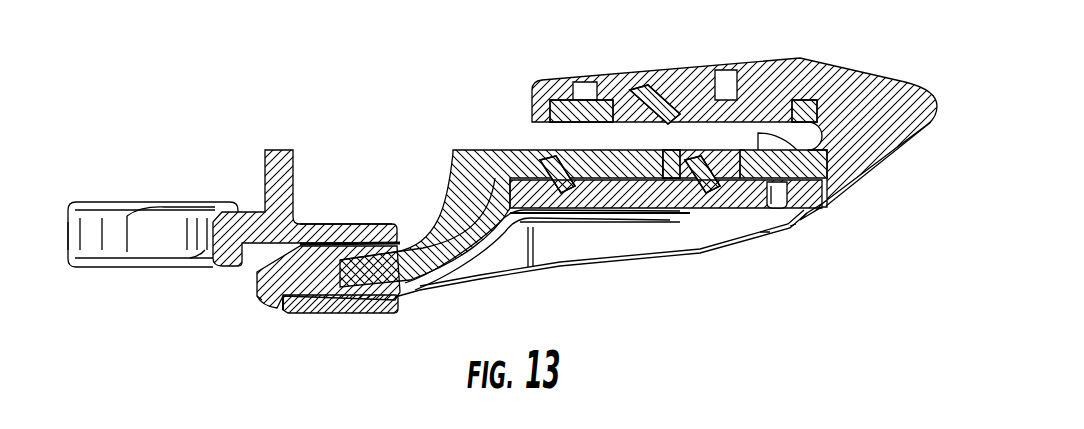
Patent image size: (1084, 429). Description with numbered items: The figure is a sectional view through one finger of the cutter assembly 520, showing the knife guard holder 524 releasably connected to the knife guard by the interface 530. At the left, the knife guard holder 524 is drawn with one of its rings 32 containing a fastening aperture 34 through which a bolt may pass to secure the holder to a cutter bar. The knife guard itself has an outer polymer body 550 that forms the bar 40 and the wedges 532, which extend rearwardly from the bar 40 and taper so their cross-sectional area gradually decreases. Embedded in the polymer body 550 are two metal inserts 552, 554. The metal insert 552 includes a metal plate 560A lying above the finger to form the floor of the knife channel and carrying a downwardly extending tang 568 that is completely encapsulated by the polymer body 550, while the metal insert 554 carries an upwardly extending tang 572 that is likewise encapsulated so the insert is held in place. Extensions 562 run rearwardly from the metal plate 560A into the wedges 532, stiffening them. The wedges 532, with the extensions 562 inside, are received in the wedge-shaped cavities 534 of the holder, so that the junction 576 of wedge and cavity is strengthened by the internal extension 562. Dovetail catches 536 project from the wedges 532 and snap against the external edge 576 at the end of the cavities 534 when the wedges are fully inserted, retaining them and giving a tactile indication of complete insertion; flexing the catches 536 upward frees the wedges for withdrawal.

The rings 32 is at (68, 204).
The fastening apertures 34 is at (157, 202).
The bar 40 is at (463, 150).
The cutter assembly 520 is at (243, 165).
The knife guard holder 524 is at (266, 150).
The interface 530 is at (347, 218).
The wedges 532 is at (383, 244).
The wedge-shaped cavities 534 is at (365, 312).
The catches 536 is at (262, 300).
The outer polymer body 550 is at (619, 78).
The metal insert 552 is at (738, 180).
The metal insert 554 is at (753, 92).
The metal plate 560A is at (817, 164).
The extensions 562 is at (400, 293).
The tang 568 is at (702, 182).
The tang 572 is at (653, 97).
The junction / external edge 576 is at (381, 246).